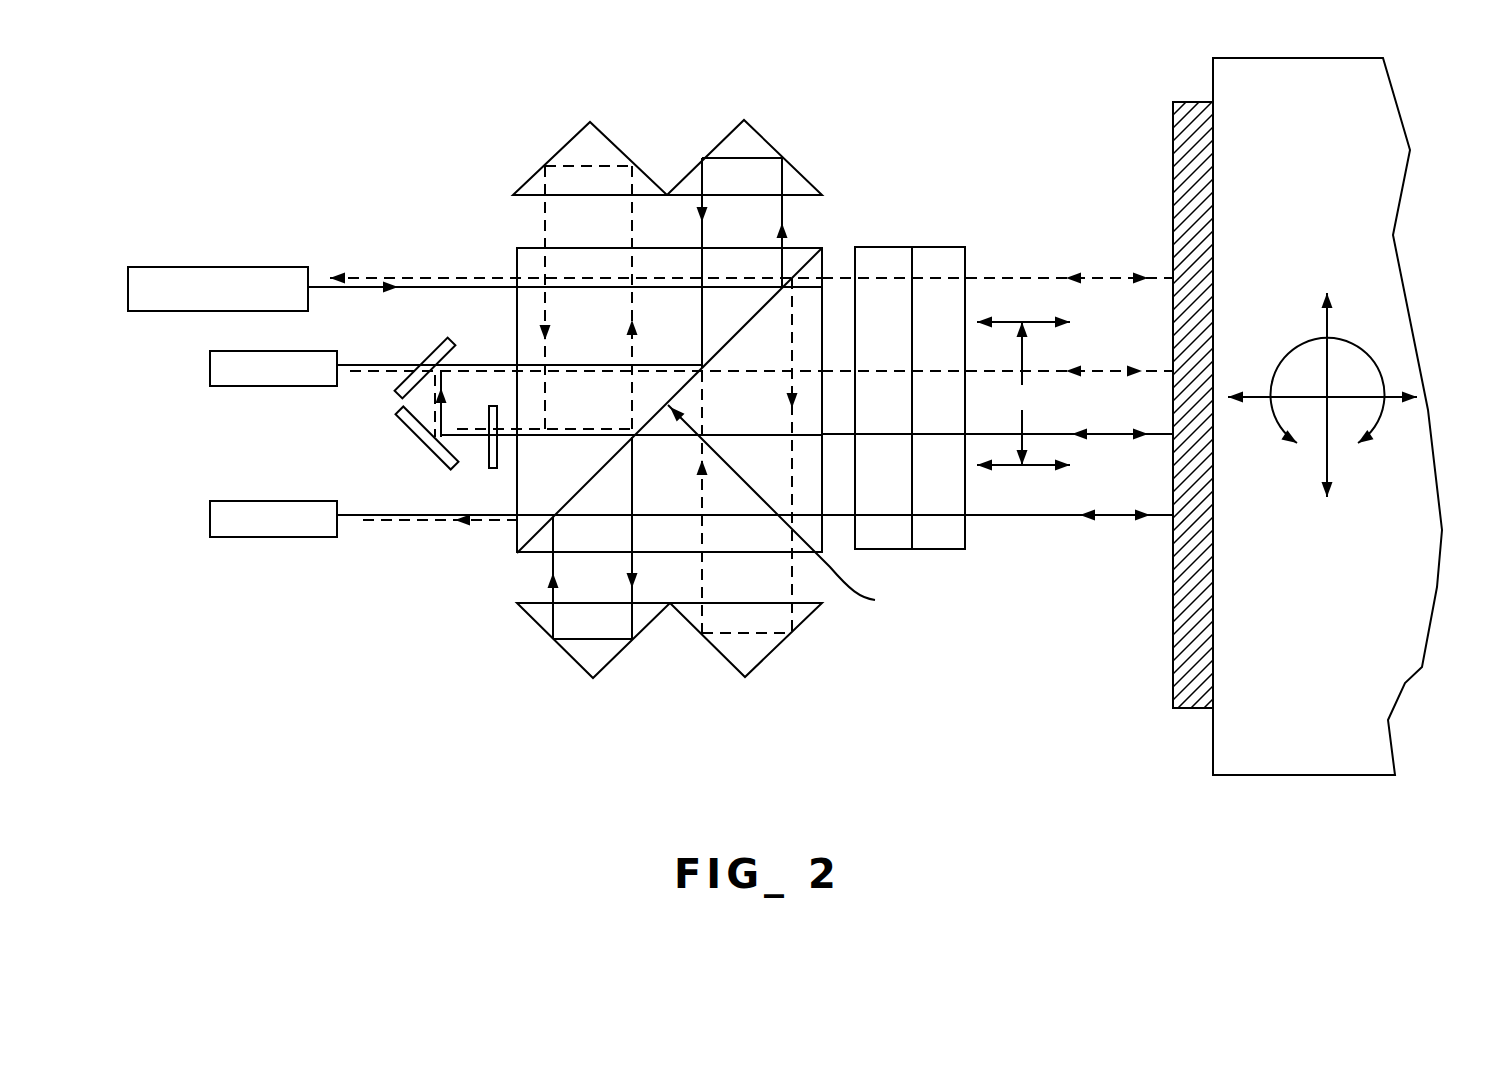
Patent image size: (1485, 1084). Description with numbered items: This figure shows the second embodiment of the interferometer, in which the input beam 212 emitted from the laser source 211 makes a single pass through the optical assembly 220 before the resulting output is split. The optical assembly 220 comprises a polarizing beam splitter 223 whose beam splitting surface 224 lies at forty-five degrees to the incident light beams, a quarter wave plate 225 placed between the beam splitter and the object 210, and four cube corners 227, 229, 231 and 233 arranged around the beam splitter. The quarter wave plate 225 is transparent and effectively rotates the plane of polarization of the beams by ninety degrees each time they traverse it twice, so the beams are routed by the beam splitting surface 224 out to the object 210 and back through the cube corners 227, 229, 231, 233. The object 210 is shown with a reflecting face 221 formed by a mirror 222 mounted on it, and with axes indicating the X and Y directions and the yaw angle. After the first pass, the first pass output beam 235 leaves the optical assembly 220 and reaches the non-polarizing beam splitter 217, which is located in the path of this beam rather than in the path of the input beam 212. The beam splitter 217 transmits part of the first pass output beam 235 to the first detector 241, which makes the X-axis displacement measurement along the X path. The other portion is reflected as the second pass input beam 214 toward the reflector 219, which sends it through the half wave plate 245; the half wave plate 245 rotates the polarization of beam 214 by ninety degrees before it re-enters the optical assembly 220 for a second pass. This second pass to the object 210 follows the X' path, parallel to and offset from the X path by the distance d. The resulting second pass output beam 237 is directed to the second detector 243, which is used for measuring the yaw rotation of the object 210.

The object 210 is at (1330, 163).
The laser source 211 is at (208, 287).
The input beam 212 is at (365, 285).
The second pass input beam 214 is at (441, 410).
The non-polarizing beam splitter 217 is at (470, 313).
The reflector 219 is at (398, 422).
The optical assembly 220 is at (877, 120).
The reflective surface 221 is at (1190, 102).
The plane mirror 222 is at (1168, 178).
The polarizing beam splitter 223 is at (797, 511).
The beam splitting surface 224 is at (805, 248).
The quarter wave plate 225 is at (910, 245).
The cube corner 227 is at (703, 155).
The cube corner 229 is at (710, 647).
The cube corner 231 is at (627, 155).
The cube corner 233 is at (627, 650).
The first pass output beam 235 is at (378, 372).
The second pass output beam 237 is at (373, 525).
The first detector 241 is at (215, 366).
The second detector 243 is at (242, 525).
The half wave plate 245 is at (490, 448).